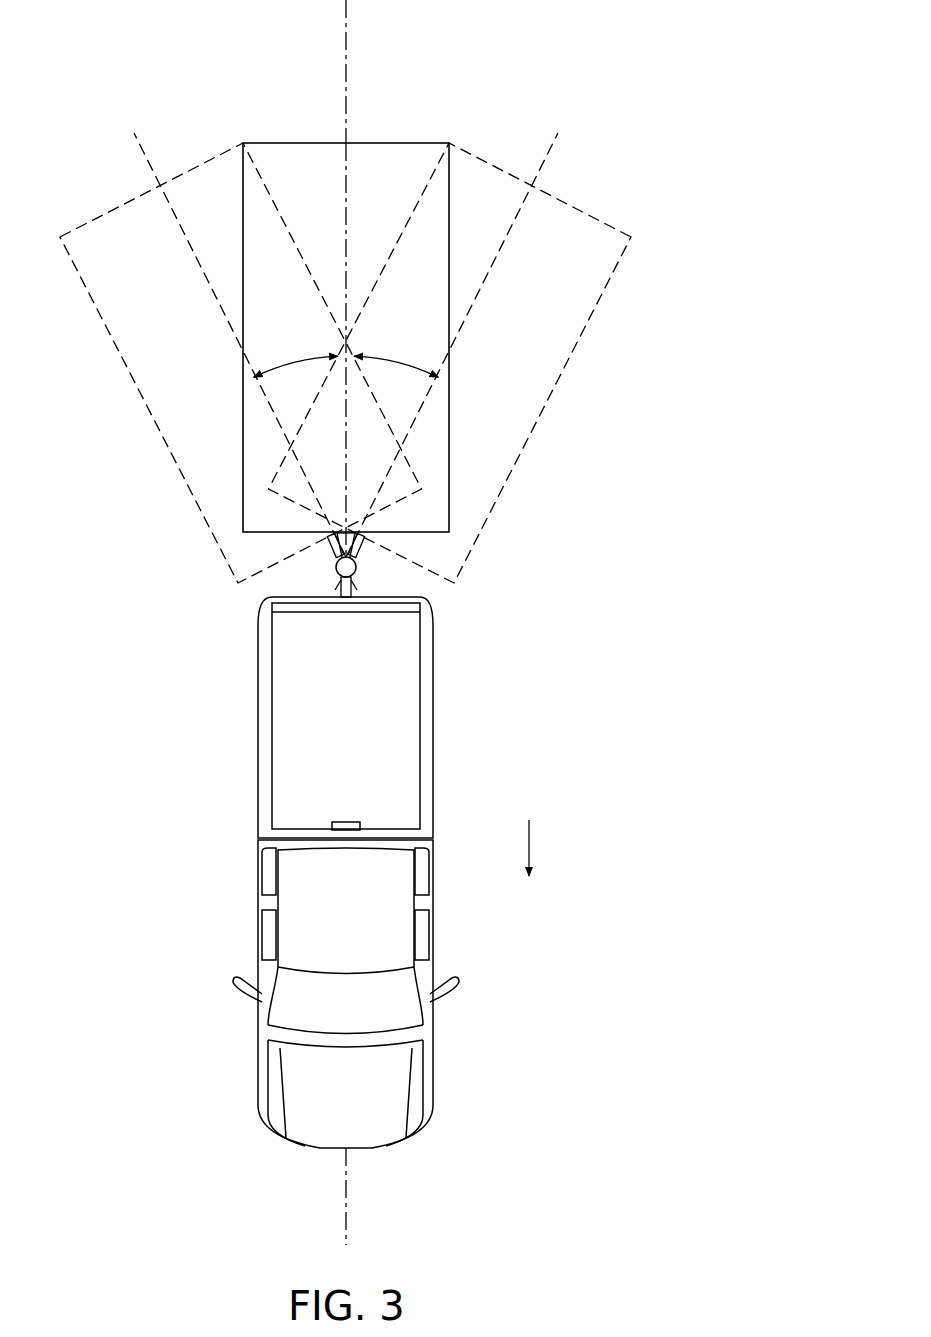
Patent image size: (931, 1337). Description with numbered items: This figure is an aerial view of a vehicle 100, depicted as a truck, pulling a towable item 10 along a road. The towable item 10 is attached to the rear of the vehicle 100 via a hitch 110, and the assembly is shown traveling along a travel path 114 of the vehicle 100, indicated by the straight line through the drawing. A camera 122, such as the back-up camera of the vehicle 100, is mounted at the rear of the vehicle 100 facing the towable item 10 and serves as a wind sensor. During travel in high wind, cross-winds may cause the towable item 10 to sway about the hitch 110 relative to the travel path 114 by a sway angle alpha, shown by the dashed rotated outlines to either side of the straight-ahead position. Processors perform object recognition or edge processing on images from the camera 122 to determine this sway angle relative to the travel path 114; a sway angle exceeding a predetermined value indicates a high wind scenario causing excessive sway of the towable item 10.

The towable item 10 is at (407, 132).
The hitch 110 is at (380, 572).
The camera 122 is at (343, 822).
The vehicle 100 is at (264, 1151).
The travel path 114 is at (529, 846).